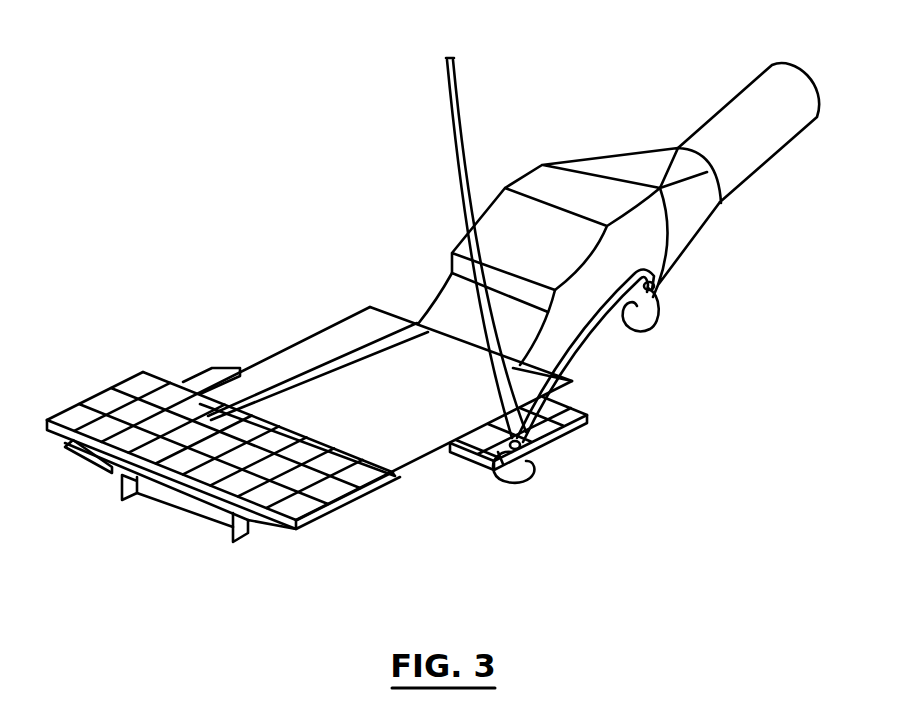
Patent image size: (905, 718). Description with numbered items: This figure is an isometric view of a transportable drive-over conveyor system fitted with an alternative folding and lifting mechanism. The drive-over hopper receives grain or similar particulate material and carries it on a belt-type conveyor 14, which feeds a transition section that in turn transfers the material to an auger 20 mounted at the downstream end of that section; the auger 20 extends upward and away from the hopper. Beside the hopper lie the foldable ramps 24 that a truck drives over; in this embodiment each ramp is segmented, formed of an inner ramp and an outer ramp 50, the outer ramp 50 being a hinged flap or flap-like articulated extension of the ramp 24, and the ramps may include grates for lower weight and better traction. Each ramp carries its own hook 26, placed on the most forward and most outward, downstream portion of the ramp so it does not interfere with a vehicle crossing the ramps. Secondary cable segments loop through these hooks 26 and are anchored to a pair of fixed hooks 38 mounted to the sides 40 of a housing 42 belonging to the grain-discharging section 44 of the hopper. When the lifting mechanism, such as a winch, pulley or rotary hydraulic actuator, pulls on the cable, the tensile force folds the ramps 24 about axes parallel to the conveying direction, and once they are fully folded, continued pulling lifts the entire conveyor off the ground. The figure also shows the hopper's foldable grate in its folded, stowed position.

The belt-type conveyor 14 is at (320, 390).
The auger 20 is at (768, 133).
The foldable ramps 24 is at (354, 324).
The hooks 26 is at (524, 484).
The fixed hooks 38 is at (648, 331).
The sides 40 is at (657, 260).
The housing 42 is at (564, 188).
The grain-discharging section 44 is at (507, 153).
The outer ramp 50 is at (333, 490).